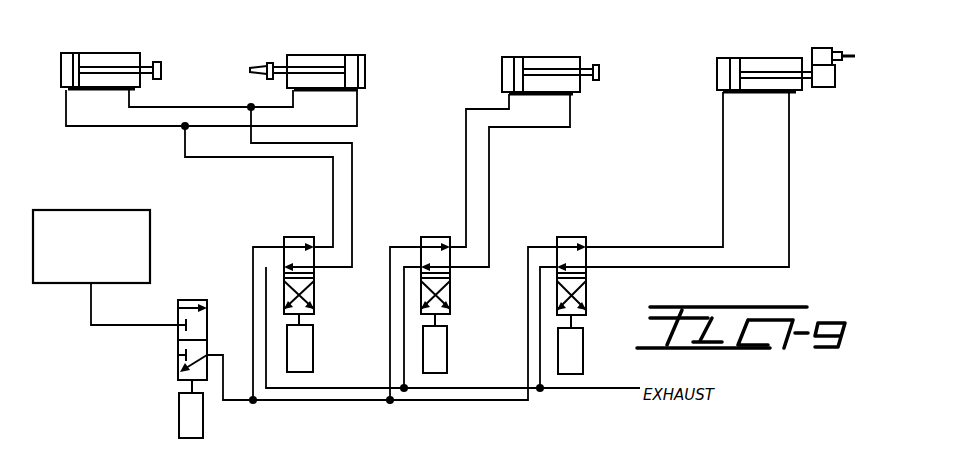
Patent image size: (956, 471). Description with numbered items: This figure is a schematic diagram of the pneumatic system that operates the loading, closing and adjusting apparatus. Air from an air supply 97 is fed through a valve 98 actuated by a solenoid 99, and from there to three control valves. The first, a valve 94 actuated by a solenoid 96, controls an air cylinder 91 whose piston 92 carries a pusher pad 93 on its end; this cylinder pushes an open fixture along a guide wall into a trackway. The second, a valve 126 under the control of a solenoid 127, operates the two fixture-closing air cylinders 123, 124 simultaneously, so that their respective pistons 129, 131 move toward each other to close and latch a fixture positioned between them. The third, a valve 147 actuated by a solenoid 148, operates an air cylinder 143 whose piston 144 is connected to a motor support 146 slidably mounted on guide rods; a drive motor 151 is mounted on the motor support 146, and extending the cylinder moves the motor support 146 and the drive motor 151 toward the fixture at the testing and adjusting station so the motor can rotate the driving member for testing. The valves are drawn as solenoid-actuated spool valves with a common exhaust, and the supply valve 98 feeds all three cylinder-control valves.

The air cylinder 91 is at (529, 57).
The piston 92 is at (577, 57).
The pusher pad 93 is at (613, 57).
The valve 94 is at (450, 280).
The solenoid 96 is at (447, 358).
The air supply 97 is at (150, 218).
The valve 98 is at (192, 300).
The solenoid 99 is at (204, 408).
The fixture-closing air cylinder 123 is at (99, 53).
The fixture-closing air cylinder 124 is at (313, 56).
The valve 126 is at (296, 238).
The solenoid 127 is at (313, 356).
The piston 129 is at (133, 60).
The piston 131 is at (300, 67).
The air cylinder 143 is at (735, 30).
The piston 144 is at (773, 85).
The motor support 146 is at (822, 87).
The valve 147 is at (586, 279).
The solenoid 148 is at (583, 356).
The drive motor 151 is at (812, 54).